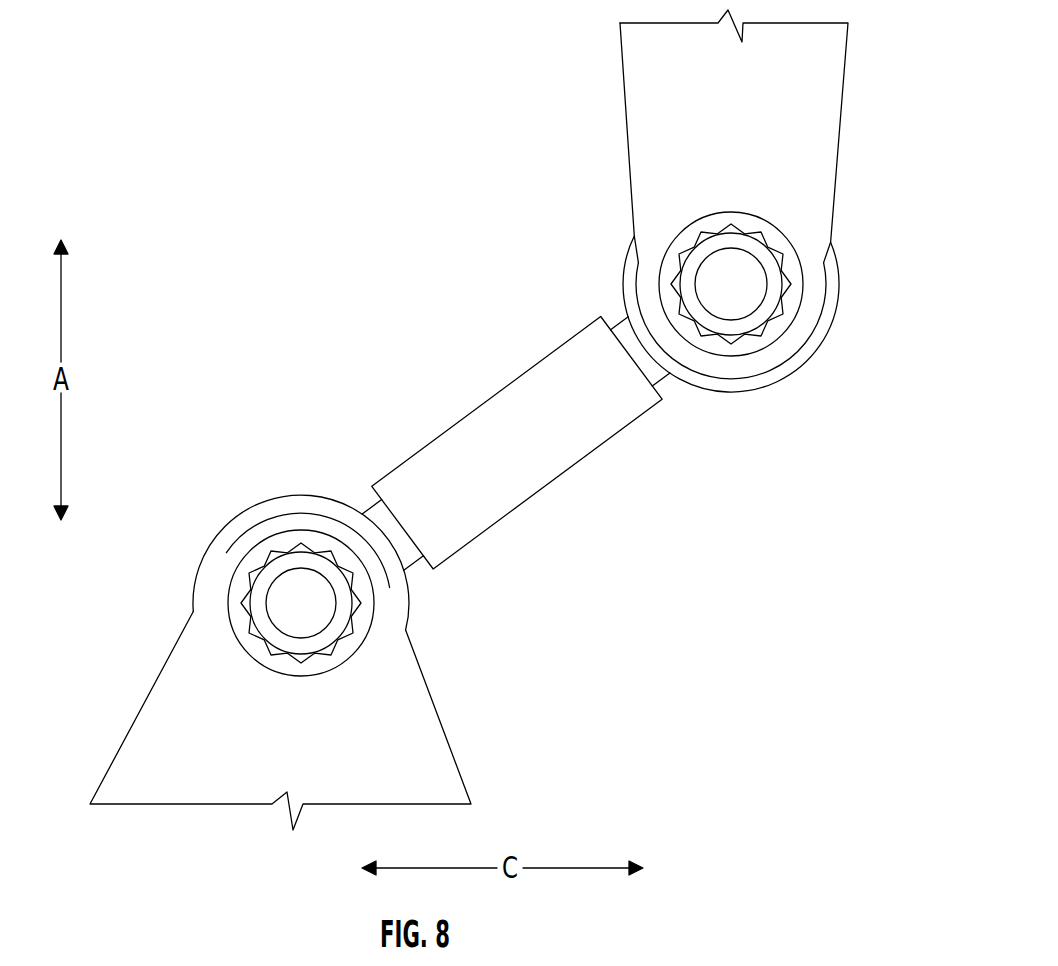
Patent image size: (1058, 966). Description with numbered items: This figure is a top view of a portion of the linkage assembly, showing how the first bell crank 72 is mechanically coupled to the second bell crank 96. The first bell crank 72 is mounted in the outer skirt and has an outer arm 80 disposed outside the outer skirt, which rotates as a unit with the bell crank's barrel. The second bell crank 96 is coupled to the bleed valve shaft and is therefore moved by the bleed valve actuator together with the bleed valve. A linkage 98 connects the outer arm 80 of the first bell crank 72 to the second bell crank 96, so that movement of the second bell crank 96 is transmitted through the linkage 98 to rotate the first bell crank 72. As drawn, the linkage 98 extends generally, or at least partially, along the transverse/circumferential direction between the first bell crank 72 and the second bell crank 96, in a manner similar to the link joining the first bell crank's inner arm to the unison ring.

The first bell crank 72 is at (900, 182).
The outer arm 80 is at (808, 208).
The second bell crank 96 is at (210, 632).
The linkage 98 is at (498, 415).